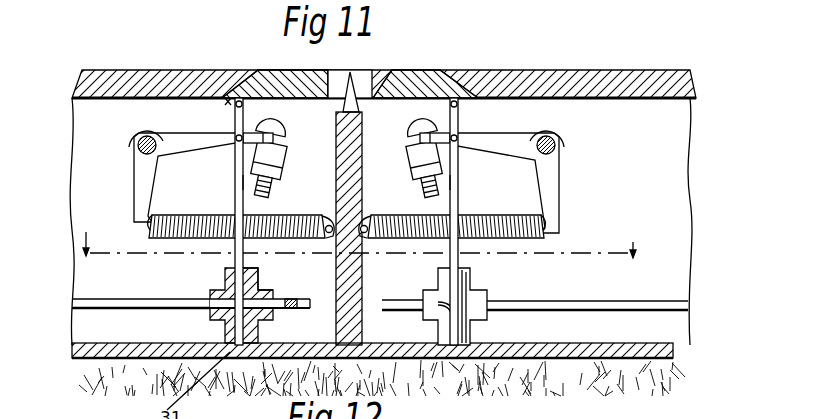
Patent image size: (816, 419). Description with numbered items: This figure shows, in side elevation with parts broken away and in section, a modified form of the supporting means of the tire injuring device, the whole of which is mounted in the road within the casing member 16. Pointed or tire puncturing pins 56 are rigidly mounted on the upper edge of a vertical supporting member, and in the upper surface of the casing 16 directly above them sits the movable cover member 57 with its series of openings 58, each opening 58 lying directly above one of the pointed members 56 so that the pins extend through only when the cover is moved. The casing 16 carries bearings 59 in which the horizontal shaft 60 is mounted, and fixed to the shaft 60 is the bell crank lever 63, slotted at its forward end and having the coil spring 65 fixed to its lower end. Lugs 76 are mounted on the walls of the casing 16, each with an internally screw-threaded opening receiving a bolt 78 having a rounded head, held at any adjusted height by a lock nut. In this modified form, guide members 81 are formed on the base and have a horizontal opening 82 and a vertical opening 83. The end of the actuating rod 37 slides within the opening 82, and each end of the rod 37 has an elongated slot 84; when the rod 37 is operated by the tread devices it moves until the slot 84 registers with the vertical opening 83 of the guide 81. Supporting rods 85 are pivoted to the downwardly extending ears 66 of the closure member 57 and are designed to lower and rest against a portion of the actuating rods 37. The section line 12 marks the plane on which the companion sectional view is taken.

The casing member 16 is at (603, 76).
The pointed or tire puncturing pins 56 is at (364, 93).
The movable cover member 57 is at (295, 73).
The openings 58 is at (348, 71).
The bearings 59 is at (136, 133).
The horizontal shaft 60 is at (140, 151).
The bell crank lever 63 is at (140, 200).
The coil spring 65 is at (279, 216).
The ears 66 is at (233, 103).
The lugs 76 is at (346, 148).
The bolt 78 is at (290, 181).
The supporting rods 85 is at (240, 181).
The section line 12 is at (357, 249).
The actuating rod 37 is at (108, 302).
The guide members 81 is at (475, 300).
The horizontal opening 82 is at (212, 298).
The vertical opening 83 is at (259, 265).
The elongated slot 84 is at (277, 303).